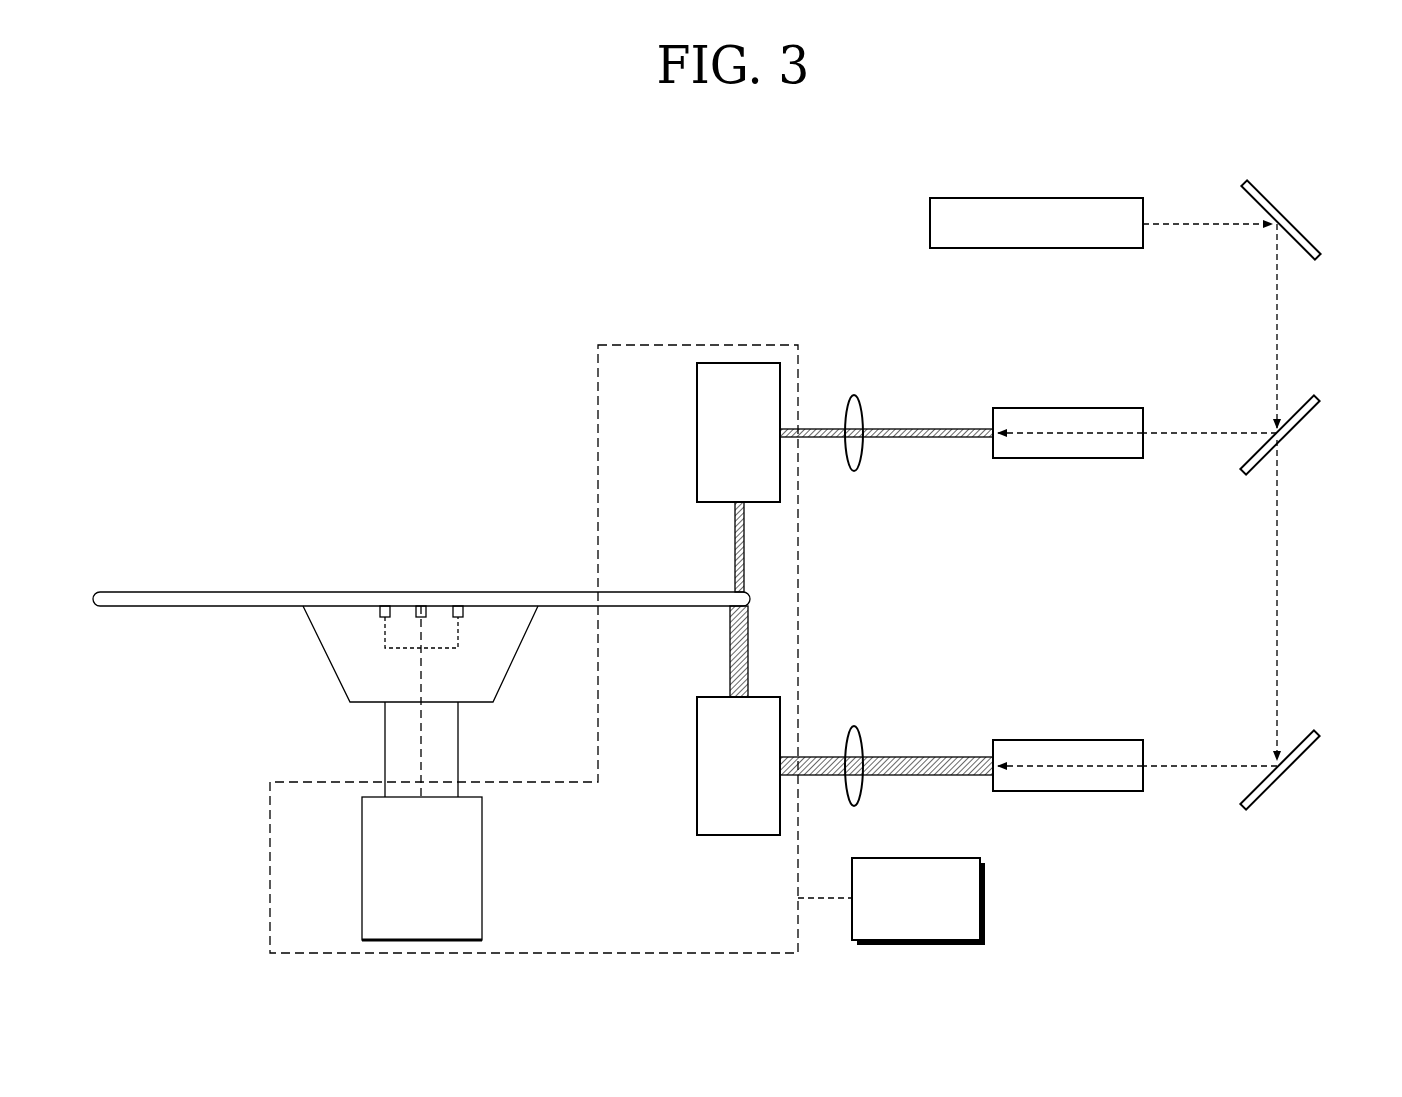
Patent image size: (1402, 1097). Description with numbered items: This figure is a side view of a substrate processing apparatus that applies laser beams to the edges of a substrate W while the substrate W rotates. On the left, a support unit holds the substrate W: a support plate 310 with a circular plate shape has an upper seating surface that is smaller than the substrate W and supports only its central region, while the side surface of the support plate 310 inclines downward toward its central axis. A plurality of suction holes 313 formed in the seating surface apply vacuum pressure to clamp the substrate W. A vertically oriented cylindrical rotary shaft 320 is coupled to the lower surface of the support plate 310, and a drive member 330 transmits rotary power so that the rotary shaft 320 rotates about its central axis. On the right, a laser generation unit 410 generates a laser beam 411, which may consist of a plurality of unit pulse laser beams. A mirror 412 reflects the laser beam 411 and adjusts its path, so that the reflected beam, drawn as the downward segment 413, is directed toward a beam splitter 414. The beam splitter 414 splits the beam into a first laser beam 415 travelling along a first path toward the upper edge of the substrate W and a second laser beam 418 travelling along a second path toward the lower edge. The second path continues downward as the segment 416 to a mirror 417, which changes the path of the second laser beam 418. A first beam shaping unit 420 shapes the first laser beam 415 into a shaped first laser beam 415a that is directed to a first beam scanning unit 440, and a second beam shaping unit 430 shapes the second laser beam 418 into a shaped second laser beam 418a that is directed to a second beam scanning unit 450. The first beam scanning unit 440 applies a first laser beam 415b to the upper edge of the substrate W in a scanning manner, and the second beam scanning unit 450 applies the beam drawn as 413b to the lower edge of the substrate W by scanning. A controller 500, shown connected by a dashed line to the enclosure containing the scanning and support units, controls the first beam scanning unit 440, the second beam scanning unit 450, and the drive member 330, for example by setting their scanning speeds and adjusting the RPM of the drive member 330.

The substrate W is at (525, 592).
The support plate 310 is at (335, 650).
The suction holes 313 is at (421, 606).
The rotary shaft 320 is at (385, 755).
The drive member 330 is at (370, 870).
The laser generation unit 410 is at (1077, 196).
The laser beam 411 is at (1190, 221).
The mirror 412 is at (1285, 218).
The second light 413 is at (1280, 326).
The reflected light 413b is at (730, 650).
The beam splitter 414 is at (1285, 432).
The first laser beam 415 is at (1190, 432).
The first laser beam 415a is at (917, 430).
The first laser beam 415b is at (735, 545).
The fourth light 416 is at (1278, 582).
The mirror 417 is at (1290, 766).
The second laser beam 418 is at (1190, 765).
The second laser beam 418a is at (917, 758).
The first beam shaping unit 420 is at (1087, 405).
The second beam shaping unit 430 is at (1087, 740).
The first beam scanning unit 440 is at (697, 428).
The second beam scanning unit 450 is at (697, 762).
The controller 500 is at (985, 898).